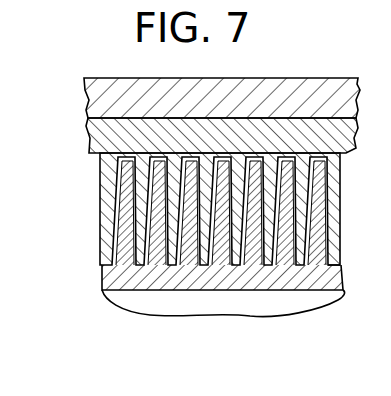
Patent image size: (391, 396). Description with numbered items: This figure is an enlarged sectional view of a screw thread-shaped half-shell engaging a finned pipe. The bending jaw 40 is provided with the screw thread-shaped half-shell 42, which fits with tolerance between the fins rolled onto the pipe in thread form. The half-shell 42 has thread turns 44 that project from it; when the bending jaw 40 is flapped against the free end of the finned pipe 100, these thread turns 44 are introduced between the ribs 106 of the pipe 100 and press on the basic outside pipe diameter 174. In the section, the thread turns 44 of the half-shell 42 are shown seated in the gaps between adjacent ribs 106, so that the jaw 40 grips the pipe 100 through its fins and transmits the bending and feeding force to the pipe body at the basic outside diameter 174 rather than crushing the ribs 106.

The bending jaw 40 is at (132, 86).
The screw thread-shaped half-shell 42 is at (103, 133).
The thread turns 44 is at (302, 207).
The finned pipe 100 is at (112, 268).
The ribs 106 is at (318, 248).
The basic outside pipe diameter 174 is at (337, 265).